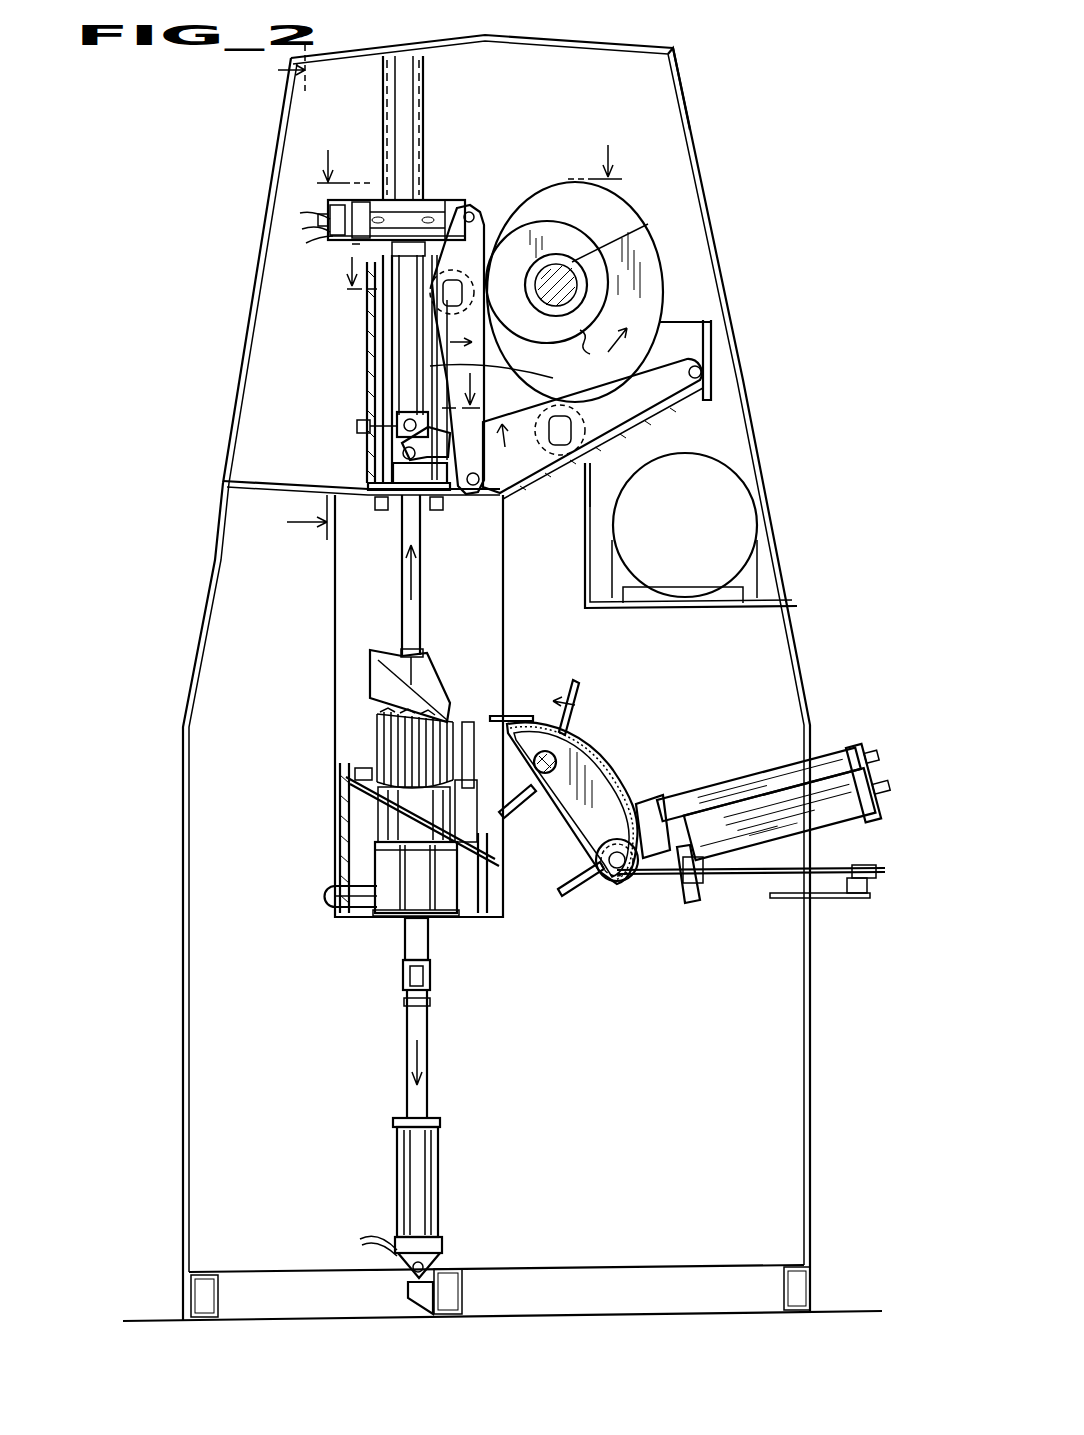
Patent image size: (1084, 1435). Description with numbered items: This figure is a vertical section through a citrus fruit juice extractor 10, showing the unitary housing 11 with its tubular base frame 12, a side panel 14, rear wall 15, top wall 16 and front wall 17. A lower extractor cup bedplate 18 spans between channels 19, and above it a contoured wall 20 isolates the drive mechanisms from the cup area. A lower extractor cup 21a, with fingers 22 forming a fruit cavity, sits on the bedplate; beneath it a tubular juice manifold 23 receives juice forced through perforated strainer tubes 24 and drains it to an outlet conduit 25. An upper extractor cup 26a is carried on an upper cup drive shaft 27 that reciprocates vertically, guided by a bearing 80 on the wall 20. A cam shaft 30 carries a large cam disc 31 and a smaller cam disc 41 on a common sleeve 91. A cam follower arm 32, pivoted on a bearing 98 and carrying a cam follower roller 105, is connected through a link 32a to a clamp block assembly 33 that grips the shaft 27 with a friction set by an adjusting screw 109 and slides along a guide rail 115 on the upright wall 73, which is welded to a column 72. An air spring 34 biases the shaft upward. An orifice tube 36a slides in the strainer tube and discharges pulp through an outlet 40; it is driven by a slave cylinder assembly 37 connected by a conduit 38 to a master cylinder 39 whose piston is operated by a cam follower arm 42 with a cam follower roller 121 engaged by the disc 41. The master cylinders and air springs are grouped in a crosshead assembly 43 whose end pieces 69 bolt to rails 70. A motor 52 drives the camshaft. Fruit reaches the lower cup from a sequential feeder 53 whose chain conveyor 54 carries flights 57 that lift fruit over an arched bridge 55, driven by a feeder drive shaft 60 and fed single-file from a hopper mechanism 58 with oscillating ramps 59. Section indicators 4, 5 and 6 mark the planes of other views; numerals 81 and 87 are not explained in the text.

The citrus fruit juice extractor 10 is at (732, 50).
The housing 11 is at (256, 272).
The base frame 12 is at (189, 1290).
The side panel 14 is at (606, 973).
The rear wall 15 is at (210, 583).
The top wall 16 is at (548, 42).
The front wall 17 is at (780, 578).
The lower extractor cup bedplate 18 is at (345, 791).
The channels 19 is at (478, 588).
The contoured wall 20 is at (266, 495).
The lower extractor cup 21a is at (376, 716).
The fingers 22 is at (405, 752).
The tubular juice manifold 23 is at (373, 850).
The strainer tubes 24 is at (403, 872).
The outlet conduit 25 is at (336, 904).
The upper extractor cup 26a is at (422, 690).
The upper cup drive shaft 27 is at (400, 578).
The cam shaft 30 is at (545, 278).
The cam disc 31 is at (608, 214).
The cam follower arm 32 is at (664, 417).
The link 32a is at (392, 450).
The clamp block assembly 33 is at (405, 415).
The air spring 34 is at (438, 85).
The orifice tube 36a is at (404, 944).
The slave cylinder assembly 37 is at (400, 1181).
The conduit 38 is at (318, 216).
The master cylinder 39 is at (429, 199).
The outlet 40 is at (430, 946).
The cam disc 41 is at (574, 352).
The cam follower arm 42 is at (486, 368).
The crosshead assembly 43 is at (462, 210).
The motor 52 is at (706, 535).
The sequential feeder 53 is at (598, 698).
The chain conveyor 54 is at (580, 738).
The arched bridge 55 is at (602, 756).
The flights 57 is at (576, 698).
The hopper mechanism 58 is at (828, 736).
The ramps 59 is at (750, 803).
The feeder drive shaft 60 is at (614, 880).
The end pieces 69 is at (362, 245).
The rails 70 is at (335, 238).
The column 72 is at (455, 362).
The upright wall 73 is at (384, 350).
The bearing 80 is at (393, 480).
The rod bore 81 is at (424, 110).
The support plate 87 is at (679, 328).
The sleeve 91 is at (628, 235).
The bearing 98 is at (700, 362).
The cam follower roller 105 is at (564, 470).
The adjusting screw 109 is at (356, 425).
The guide rail 115 is at (368, 374).
The cam follower roller 121 is at (398, 318).
The section line 4 is at (302, 292).
The section line 5 is at (469, 165).
The section line 6 is at (412, 348).